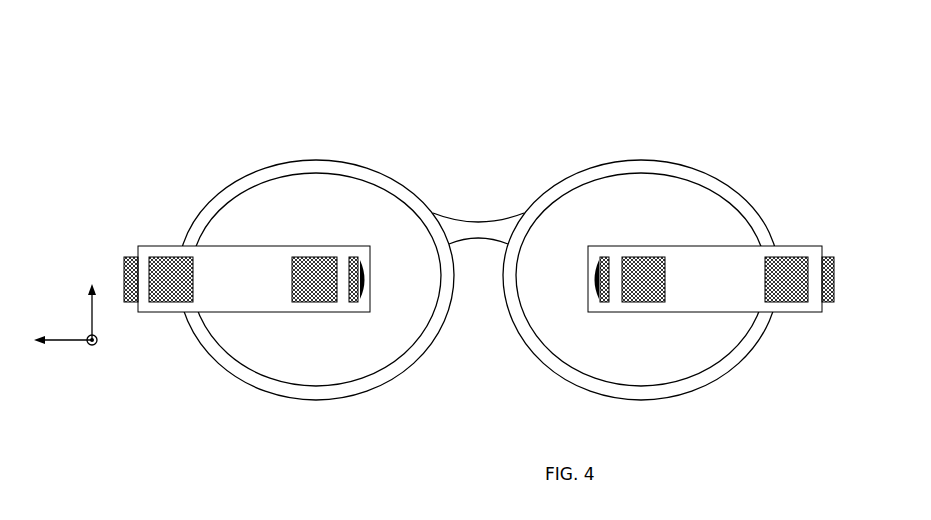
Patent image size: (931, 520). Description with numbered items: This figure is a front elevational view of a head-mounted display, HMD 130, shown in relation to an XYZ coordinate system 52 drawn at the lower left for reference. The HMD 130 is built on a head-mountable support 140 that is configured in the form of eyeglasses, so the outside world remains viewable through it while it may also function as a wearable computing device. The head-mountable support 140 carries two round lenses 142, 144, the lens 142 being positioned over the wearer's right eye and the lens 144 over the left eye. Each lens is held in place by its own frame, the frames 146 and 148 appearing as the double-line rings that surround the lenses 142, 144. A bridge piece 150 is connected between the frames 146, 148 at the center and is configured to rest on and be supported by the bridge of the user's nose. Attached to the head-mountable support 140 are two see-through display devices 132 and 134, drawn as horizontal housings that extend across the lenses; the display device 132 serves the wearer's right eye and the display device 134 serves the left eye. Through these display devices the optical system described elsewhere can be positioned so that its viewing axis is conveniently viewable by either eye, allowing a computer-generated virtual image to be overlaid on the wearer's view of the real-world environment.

The XYZ coordinate system 52 is at (75, 340).
The HMD 130 is at (474, 132).
The see-through display device 132 is at (237, 246).
The see-through display device 134 is at (712, 247).
The head-mountable support 140 is at (601, 160).
The lens 142 is at (297, 385).
The lens 144 is at (700, 372).
The frame 146 is at (213, 365).
The frame 148 is at (753, 357).
The bridge piece 150 is at (504, 213).